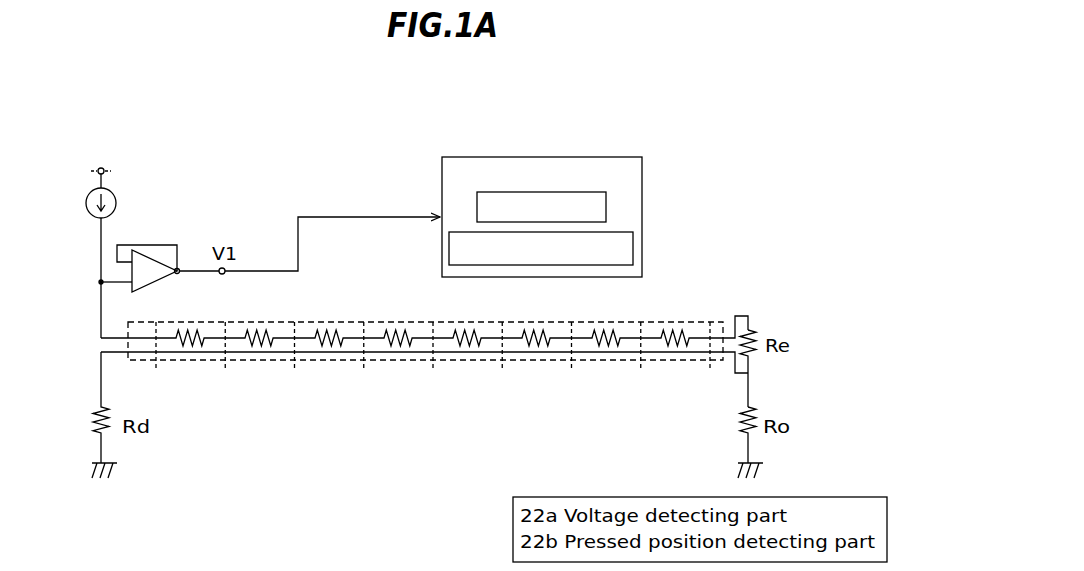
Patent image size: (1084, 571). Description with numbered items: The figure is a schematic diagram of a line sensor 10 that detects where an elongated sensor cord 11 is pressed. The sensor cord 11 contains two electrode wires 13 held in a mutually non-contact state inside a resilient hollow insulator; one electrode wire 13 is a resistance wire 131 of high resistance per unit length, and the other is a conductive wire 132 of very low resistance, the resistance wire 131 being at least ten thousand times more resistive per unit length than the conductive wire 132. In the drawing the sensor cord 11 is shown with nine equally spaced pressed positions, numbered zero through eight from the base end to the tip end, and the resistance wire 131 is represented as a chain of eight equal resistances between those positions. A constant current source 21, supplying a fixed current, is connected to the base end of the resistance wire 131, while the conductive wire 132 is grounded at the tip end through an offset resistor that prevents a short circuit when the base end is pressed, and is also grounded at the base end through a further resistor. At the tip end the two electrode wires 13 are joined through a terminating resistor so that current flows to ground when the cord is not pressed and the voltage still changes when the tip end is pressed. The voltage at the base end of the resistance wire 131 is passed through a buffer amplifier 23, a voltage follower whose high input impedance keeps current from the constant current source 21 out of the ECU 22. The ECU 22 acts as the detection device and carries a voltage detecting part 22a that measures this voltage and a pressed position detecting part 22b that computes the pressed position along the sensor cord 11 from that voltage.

The line sensor 10 is at (361, 126).
The sensor cord 11 is at (693, 316).
The electrode wire 13 is at (507, 374).
The resistance wire 131 is at (310, 348).
The conductive wire 132 is at (402, 360).
The constant current source 21 is at (118, 178).
The ECU 22 is at (565, 201).
The voltage detecting part 22a is at (606, 208).
The pressed position detecting part 22b is at (633, 248).
The buffer amplifier 23 is at (152, 260).